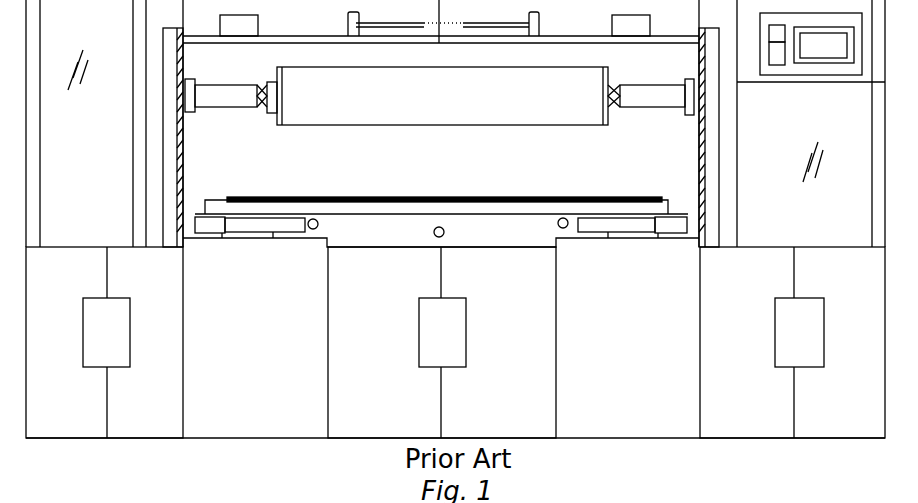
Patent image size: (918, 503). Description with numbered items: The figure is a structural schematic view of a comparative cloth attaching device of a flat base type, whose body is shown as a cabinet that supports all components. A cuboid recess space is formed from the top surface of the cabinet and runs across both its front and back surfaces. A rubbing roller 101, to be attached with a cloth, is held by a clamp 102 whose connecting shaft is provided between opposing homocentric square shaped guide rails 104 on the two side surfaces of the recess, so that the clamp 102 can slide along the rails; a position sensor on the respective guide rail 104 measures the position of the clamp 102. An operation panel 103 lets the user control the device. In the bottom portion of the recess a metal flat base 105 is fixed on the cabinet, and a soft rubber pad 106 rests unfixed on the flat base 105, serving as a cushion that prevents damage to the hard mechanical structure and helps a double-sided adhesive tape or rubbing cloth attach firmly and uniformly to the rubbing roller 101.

The rubbing roller 101 is at (575, 130).
The clamp 102 is at (238, 114).
The operation panel 103 is at (821, 72).
The guide rails 104 is at (175, 224).
The flat base 105 is at (215, 197).
The soft rubber pad 106 is at (375, 192).